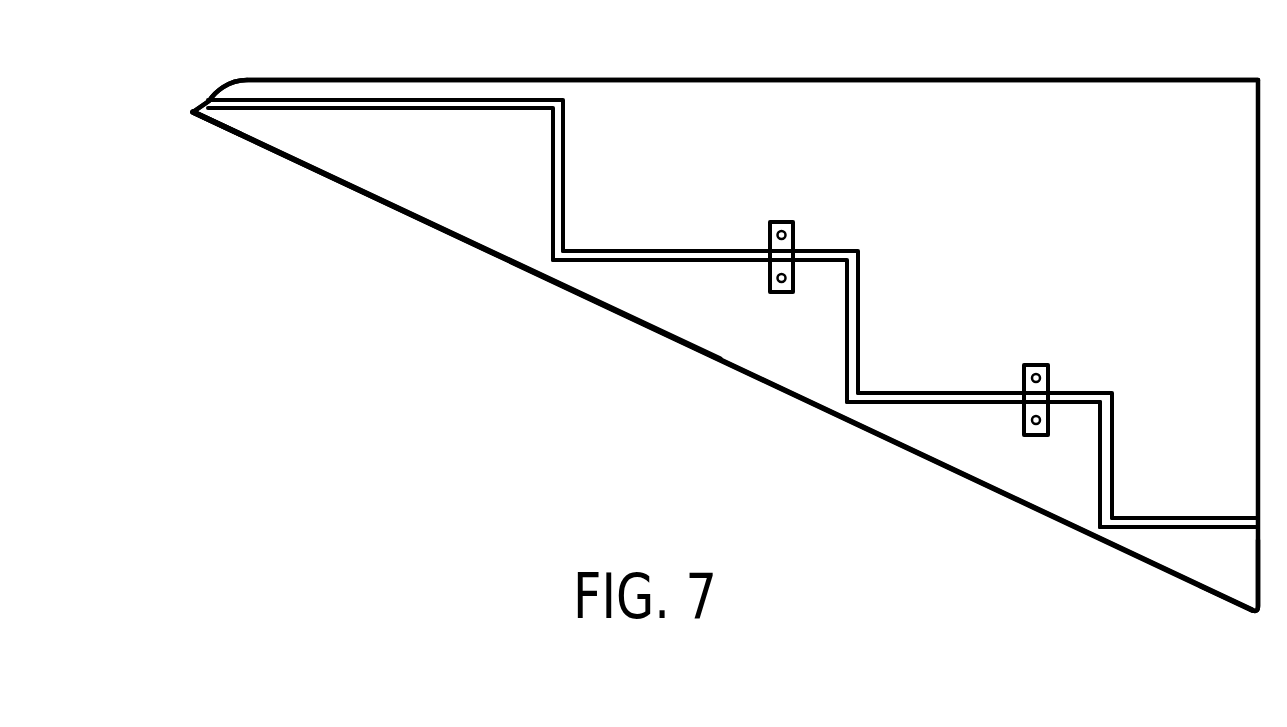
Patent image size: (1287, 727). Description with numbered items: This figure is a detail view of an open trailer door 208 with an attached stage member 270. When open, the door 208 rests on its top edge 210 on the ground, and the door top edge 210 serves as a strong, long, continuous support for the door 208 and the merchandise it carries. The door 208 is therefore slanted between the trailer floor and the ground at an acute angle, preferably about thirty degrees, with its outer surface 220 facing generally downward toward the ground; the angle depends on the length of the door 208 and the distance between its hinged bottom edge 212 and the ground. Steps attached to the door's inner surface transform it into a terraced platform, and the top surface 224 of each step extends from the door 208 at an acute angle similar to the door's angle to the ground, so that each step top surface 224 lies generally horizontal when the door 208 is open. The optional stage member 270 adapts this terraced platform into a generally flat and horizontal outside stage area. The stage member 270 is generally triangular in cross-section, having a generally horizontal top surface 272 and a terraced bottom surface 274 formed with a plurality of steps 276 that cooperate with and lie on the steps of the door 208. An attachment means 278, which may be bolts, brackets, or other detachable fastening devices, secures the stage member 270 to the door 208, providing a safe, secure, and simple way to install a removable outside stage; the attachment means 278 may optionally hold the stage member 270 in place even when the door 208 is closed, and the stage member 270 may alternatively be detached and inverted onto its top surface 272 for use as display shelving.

The door 208 is at (778, 350).
The door top edge 210 is at (1263, 615).
The hinged bottom edge 212 is at (220, 132).
The outer surface 220 is at (577, 293).
The step top surface 224 is at (1158, 527).
The stage member 270 is at (733, 265).
The top surface 272 is at (850, 78).
The terraced bottom surface 274 is at (863, 362).
The steps 276 is at (589, 247).
The attachment means 278 is at (794, 239).